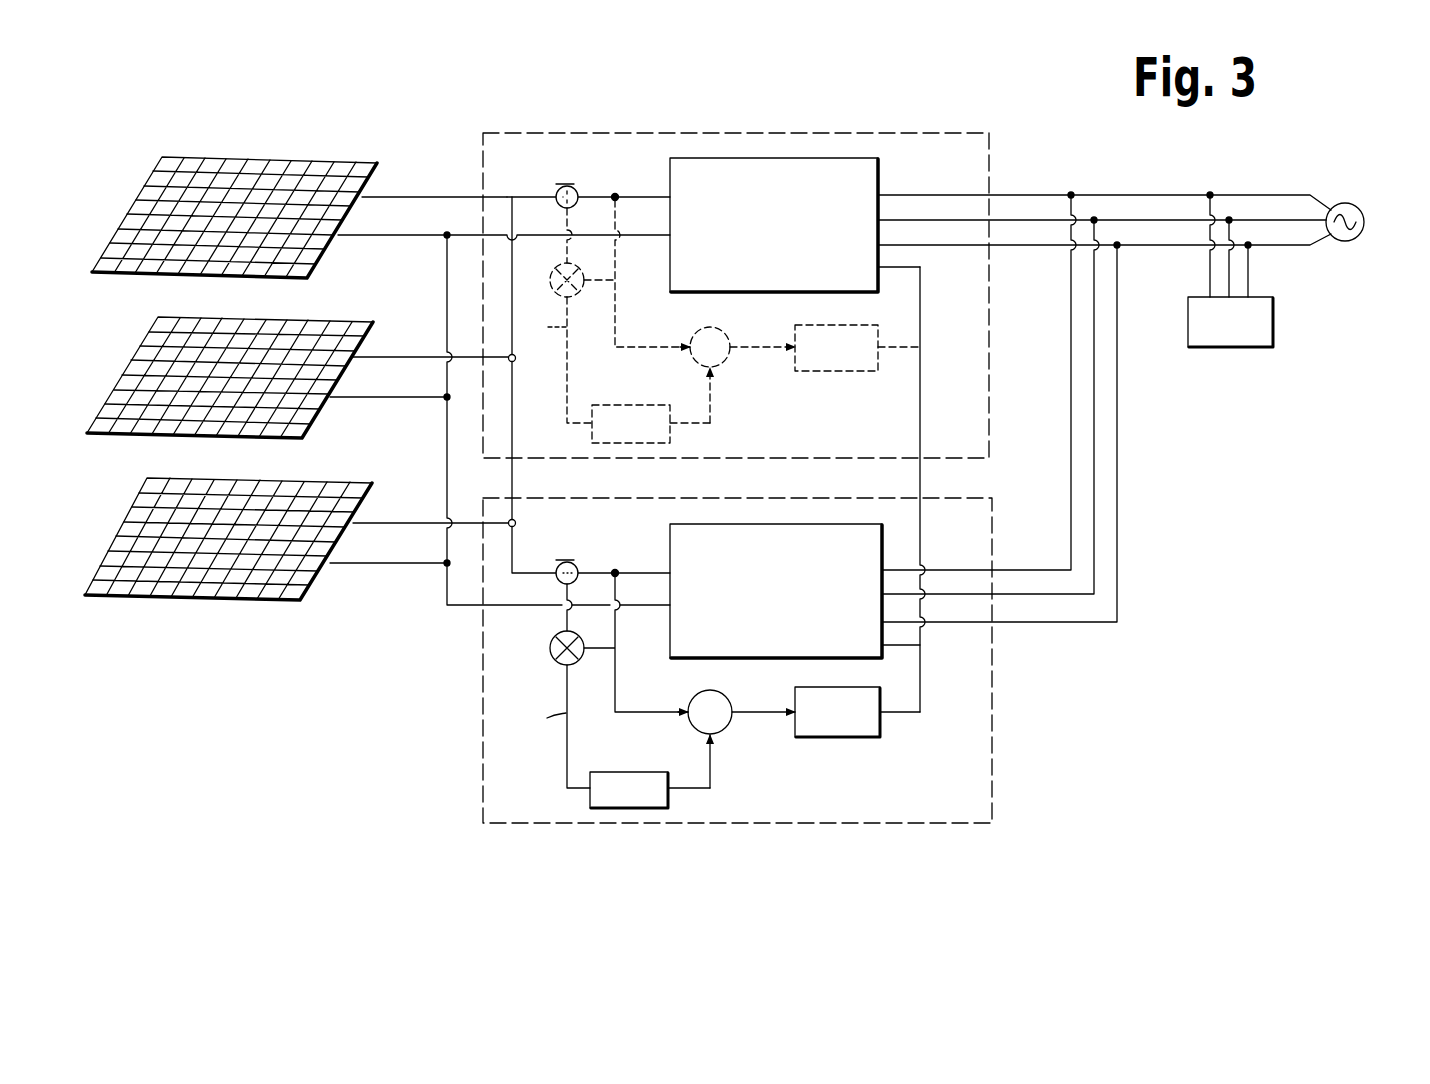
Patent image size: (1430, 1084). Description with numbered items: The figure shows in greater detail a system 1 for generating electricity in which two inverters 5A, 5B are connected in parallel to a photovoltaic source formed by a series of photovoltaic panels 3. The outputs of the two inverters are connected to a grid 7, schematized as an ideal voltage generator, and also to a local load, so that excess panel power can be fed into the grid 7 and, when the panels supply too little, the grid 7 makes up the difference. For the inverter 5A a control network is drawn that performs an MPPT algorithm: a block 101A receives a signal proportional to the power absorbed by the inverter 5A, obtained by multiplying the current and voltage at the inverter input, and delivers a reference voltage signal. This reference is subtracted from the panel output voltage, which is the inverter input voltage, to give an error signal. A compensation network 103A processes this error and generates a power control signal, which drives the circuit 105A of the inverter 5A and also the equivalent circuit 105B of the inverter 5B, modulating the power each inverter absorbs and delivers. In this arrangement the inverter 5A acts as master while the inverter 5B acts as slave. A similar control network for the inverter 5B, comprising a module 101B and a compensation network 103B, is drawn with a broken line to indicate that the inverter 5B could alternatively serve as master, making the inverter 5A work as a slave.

The plant or system 1 is at (1054, 705).
The photovoltaic panels 3 is at (150, 218).
The inverter 5A is at (998, 535).
The inverter 5B is at (1001, 147).
The grid 7 is at (1360, 207).
The MPPT block 101A is at (616, 777).
The MPPT module 101B is at (626, 418).
The compensation network 103A is at (830, 732).
The compensation network 103B is at (830, 362).
The circuit of the inverter 105A is at (690, 548).
The equivalent circuit of the inverter 105B is at (861, 190).